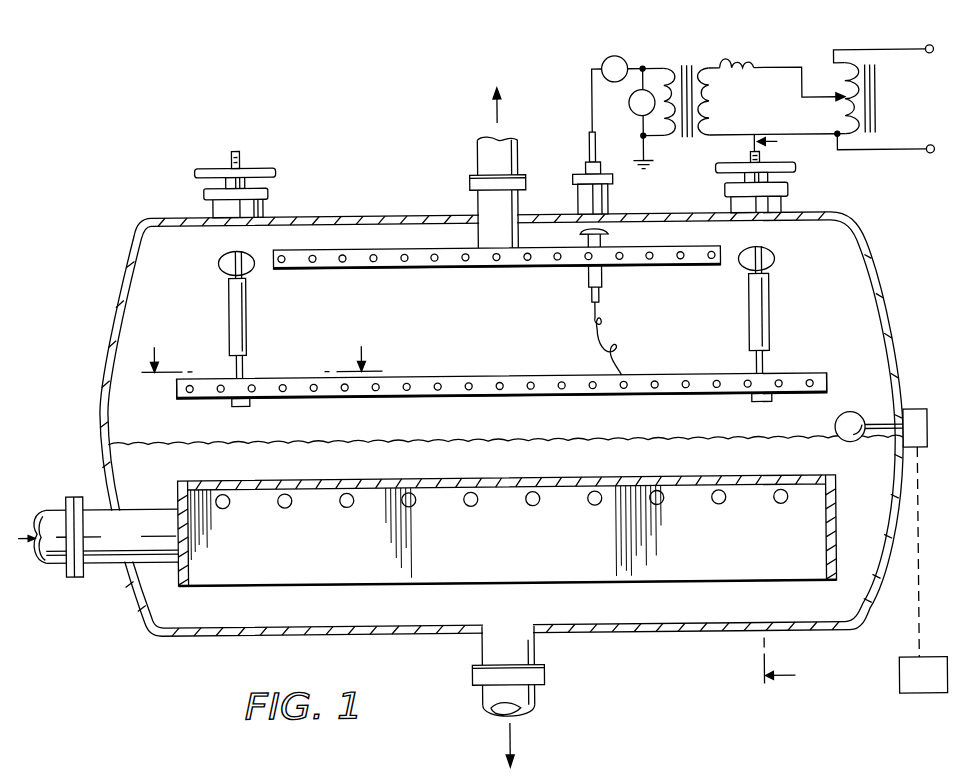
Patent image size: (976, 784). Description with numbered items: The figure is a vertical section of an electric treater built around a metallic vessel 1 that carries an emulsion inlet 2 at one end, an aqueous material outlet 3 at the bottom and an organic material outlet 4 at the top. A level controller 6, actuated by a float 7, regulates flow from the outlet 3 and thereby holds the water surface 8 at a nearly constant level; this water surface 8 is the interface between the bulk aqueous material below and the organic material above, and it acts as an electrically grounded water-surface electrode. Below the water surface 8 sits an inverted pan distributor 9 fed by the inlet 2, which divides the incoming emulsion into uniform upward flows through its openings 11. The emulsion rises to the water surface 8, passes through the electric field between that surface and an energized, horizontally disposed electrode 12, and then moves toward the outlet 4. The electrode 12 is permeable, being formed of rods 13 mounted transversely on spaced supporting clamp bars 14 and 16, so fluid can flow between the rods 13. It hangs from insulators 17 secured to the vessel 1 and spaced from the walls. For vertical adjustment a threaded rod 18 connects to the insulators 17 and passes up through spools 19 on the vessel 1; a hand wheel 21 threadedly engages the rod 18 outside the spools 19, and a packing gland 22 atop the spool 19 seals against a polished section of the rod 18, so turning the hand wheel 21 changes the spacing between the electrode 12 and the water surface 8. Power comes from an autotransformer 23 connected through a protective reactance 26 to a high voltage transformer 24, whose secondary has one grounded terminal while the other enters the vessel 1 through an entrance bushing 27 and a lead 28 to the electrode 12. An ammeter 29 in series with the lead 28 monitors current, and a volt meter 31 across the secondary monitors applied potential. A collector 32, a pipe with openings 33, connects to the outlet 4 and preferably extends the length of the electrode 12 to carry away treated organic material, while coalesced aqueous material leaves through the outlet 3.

The metallic vessel 1 is at (593, 633).
The emulsion inlet 2 is at (100, 567).
The aqueous material outlet 3 is at (478, 648).
The organic material outlet 4 is at (487, 207).
The level controller 6 is at (918, 697).
The float 7 is at (853, 423).
The water surface 8 is at (142, 439).
The distributor 9 is at (511, 549).
The openings 11 is at (345, 507).
The electrode 12 is at (168, 393).
The rods 13 is at (282, 378).
The supporting clamp bar 14 is at (823, 376).
The supporting clamp bar 16 is at (827, 395).
The insulators 17 is at (248, 296).
The threaded rod 18 is at (239, 149).
The spools 19 is at (263, 207).
The hand wheel 21 is at (270, 166).
The packing gland 22 is at (228, 182).
The autotransformer 23 is at (892, 94).
The high voltage transformer 24 is at (697, 60).
The protective reactance 26 is at (757, 60).
The entrance bushing 27 is at (610, 197).
The lead 28 is at (605, 322).
The ammeter 29 is at (618, 56).
The volt meter 31 is at (653, 90).
The collector 32 is at (362, 255).
The openings 33 is at (406, 262).